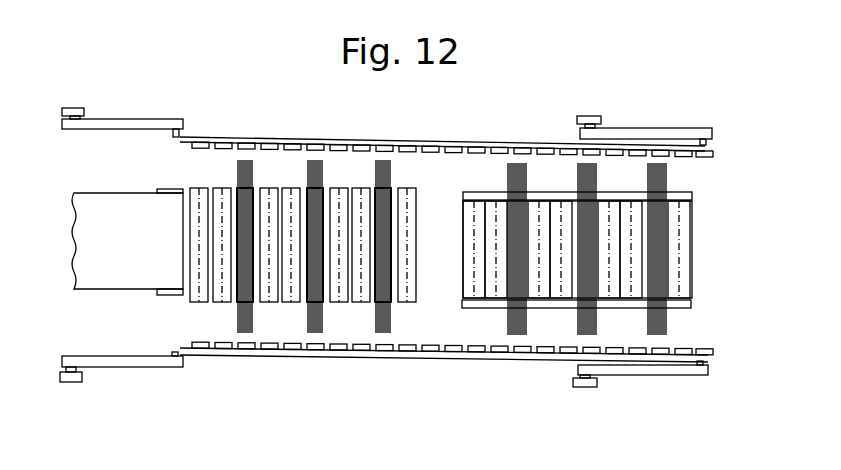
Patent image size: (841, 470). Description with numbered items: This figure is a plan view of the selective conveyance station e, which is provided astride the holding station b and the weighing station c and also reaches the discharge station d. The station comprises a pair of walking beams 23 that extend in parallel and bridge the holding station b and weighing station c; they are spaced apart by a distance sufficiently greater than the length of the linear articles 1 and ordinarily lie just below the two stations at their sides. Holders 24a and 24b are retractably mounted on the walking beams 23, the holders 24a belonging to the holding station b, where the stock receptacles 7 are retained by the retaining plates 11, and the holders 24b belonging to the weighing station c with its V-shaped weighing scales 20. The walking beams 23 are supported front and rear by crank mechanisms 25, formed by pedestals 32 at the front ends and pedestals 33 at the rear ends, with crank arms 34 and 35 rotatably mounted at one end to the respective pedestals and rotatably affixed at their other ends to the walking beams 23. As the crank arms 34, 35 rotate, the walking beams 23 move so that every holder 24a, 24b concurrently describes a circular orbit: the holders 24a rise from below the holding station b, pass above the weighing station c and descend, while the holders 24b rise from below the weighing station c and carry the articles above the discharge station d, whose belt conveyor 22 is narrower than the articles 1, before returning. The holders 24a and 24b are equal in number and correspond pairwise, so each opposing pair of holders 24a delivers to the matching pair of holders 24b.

The linear articles 1 is at (391, 323).
The stock receptacles 7 is at (465, 246).
The retaining plates 11 is at (466, 193).
The weighing scale 20 is at (421, 163).
The belt conveyor 22 is at (110, 278).
The walking beams 23 is at (421, 140).
The holders 24a is at (403, 151).
The holders 24b is at (272, 150).
The crank mechanism 25 is at (110, 117).
The pedestals 32 is at (590, 116).
The pedestals 33 is at (75, 108).
The crank arms 34 is at (650, 128).
The crank arms 35 is at (142, 119).
The holding station b is at (690, 189).
The weighing station c is at (292, 160).
The discharge station d is at (100, 190).
The selective conveyance station e is at (347, 138).